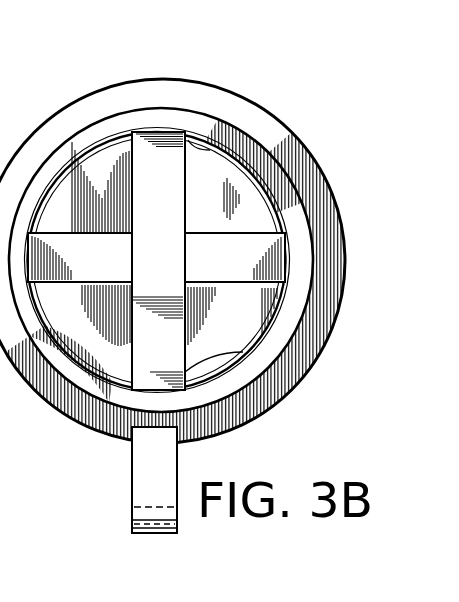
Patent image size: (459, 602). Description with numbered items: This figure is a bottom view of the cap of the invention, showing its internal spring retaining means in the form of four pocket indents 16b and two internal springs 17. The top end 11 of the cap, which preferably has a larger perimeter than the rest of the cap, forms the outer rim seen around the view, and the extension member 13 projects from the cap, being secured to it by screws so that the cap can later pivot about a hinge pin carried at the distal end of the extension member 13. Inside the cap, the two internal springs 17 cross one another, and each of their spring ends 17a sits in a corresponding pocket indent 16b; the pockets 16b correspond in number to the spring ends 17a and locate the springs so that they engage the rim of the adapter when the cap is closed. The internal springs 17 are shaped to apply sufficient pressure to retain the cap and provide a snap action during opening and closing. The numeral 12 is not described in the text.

The top end 11 is at (182, 93).
The annular top face of cap 12 is at (220, 130).
The extension member 13 is at (140, 466).
The pocket indents 16b is at (143, 130).
The internal spring 17 is at (170, 200).
The spring ends 17a is at (212, 127).